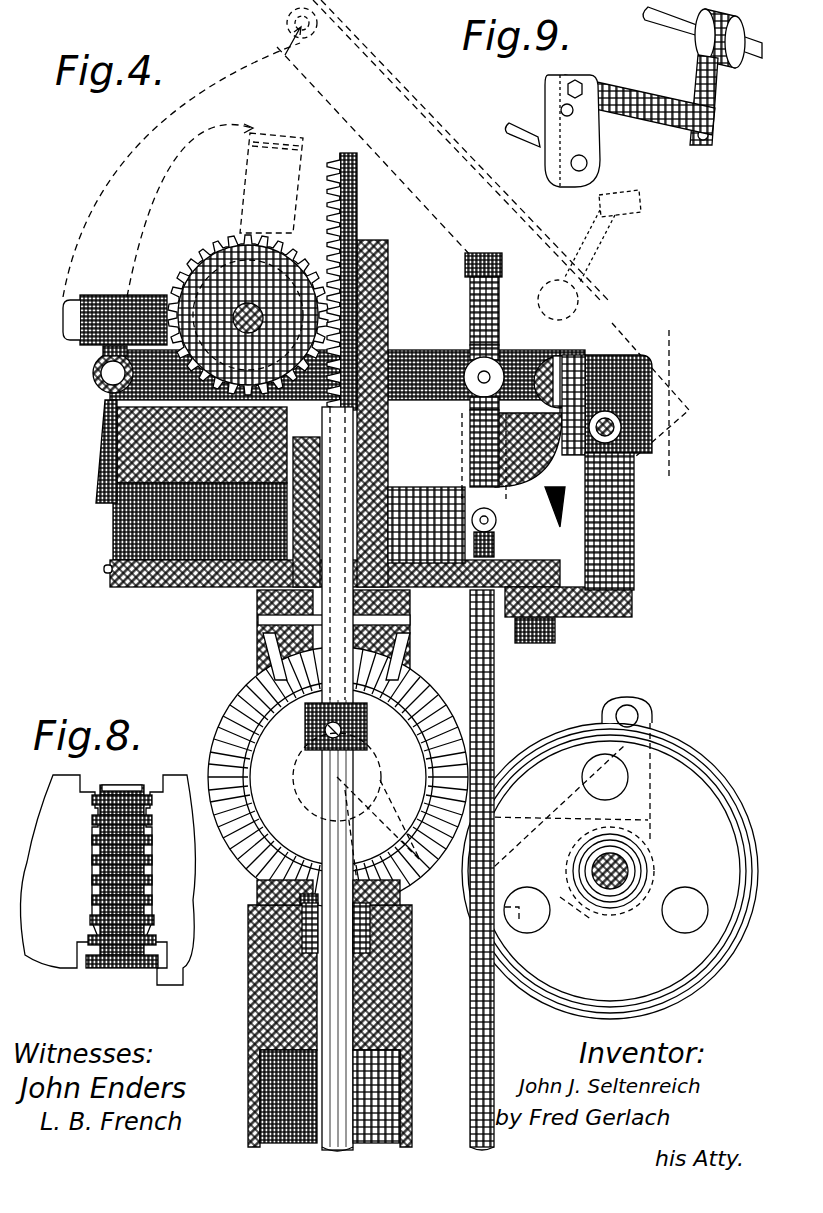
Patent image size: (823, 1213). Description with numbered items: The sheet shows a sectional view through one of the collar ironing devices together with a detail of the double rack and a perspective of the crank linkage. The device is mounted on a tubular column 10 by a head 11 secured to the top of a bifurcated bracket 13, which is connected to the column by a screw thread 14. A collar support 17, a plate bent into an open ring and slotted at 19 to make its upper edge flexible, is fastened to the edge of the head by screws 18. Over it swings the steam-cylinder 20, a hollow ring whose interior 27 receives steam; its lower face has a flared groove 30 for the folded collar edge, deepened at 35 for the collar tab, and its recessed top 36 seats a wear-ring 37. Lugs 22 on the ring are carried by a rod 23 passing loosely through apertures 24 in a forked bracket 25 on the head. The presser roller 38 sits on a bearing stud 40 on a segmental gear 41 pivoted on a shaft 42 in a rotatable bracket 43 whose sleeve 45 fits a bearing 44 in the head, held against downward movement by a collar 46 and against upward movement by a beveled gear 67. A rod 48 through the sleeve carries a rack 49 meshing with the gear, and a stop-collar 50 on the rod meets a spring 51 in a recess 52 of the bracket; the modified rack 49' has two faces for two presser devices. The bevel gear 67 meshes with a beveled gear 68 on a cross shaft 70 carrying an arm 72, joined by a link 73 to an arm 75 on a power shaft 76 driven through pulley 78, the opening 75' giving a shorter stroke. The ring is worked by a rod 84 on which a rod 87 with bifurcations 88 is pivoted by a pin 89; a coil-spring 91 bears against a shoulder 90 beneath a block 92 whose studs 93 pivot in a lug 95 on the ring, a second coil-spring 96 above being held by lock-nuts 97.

In FIG. 4, the tubular support or column 10 is at (250, 1062).
In FIG. 4, the head 11 is at (163, 588).
In FIG. 4, the bifurcated bracket 13 is at (260, 630).
In FIG. 4, the screw thread 14 is at (248, 987).
In FIG. 4, the collar support 17 is at (112, 527).
In FIG. 4, the screws 18 is at (104, 571).
In FIG. 4, the slot 19 is at (140, 530).
In FIG. 4, the steam-cylinder 20 is at (97, 383).
In FIG. 4, the lugs 22 is at (652, 372).
In FIG. 4, the rod 23 is at (615, 427).
In FIG. 4, the apertures 24 is at (612, 438).
In FIG. 4, the forked bracket 25 is at (634, 550).
In FIG. 4, the interior 27 is at (288, 22).
In FIG. 4, the flared groove or channel 30 is at (98, 420).
In FIG. 4, the extended portion of groove 35 is at (565, 358).
In FIG. 4, the recess 36 is at (102, 358).
In FIG. 4, the wear-ring 37 is at (385, 73).
In FIG. 4, the presser device or roller 38 is at (100, 298).
In FIG. 4, the bearing stud 40 is at (172, 318).
In FIG. 4, the segmental gear 41 is at (248, 315).
In FIG. 8, the segmental gear 41 is at (175, 878).
In FIG. 4, the shaft 42 is at (263, 318).
In FIG. 4, the rotatable support or bracket 43 is at (310, 248).
In FIG. 4, the bearing 44 is at (380, 527).
In FIG. 4, the sleeve 45 is at (300, 455).
In FIG. 4, the collar 46 is at (378, 466).
In FIG. 4, the rod 48 is at (256, 608).
In FIG. 8, the rod 48 is at (112, 787).
In FIG. 4, the rack 49 is at (367, 281).
In FIG. 8, the rack 49' is at (130, 774).
In FIG. 4, the stop-collar 50 is at (305, 728).
In FIG. 4, the spring 51 is at (258, 900).
In FIG. 4, the recess 52 is at (300, 925).
In FIG. 4, the beveled gear 67 is at (268, 650).
In FIG. 4, the beveled gear 68 is at (210, 748).
In FIG. 4, the cross shaft 70 is at (296, 779).
In FIG. 9, the cross shaft 70 is at (665, 25).
In FIG. 4, the arm 72 is at (382, 778).
In FIG. 9, the arm 72 is at (722, 100).
In FIG. 4, the link 73 is at (515, 855).
In FIG. 9, the link 73 is at (645, 105).
In FIG. 4, the arm or crank 75 is at (606, 828).
In FIG. 9, the arm or crank 75 is at (571, 131).
In FIG. 4, the opening 75' is at (662, 717).
In FIG. 9, the opening 75' is at (542, 106).
In FIG. 4, the shaft 76 is at (625, 868).
In FIG. 9, the shaft 76 is at (588, 163).
In FIG. 4, the tight pulley 78 is at (755, 760).
In FIG. 4, the rod 84 is at (494, 1042).
In FIG. 4, the rod 87 is at (465, 448).
In FIG. 4, the bifurcations 88 is at (471, 514).
In FIG. 4, the pin 89 is at (474, 528).
In FIG. 4, the shoulder 90 is at (468, 470).
In FIG. 4, the coil-spring 91 is at (500, 450).
In FIG. 4, the block 92 is at (464, 375).
In FIG. 4, the studs 93 is at (470, 400).
In FIG. 4, the lug 95 is at (473, 358).
In FIG. 4, the coil-spring 96 is at (470, 312).
In FIG. 4, the lock-nuts 97 is at (465, 266).